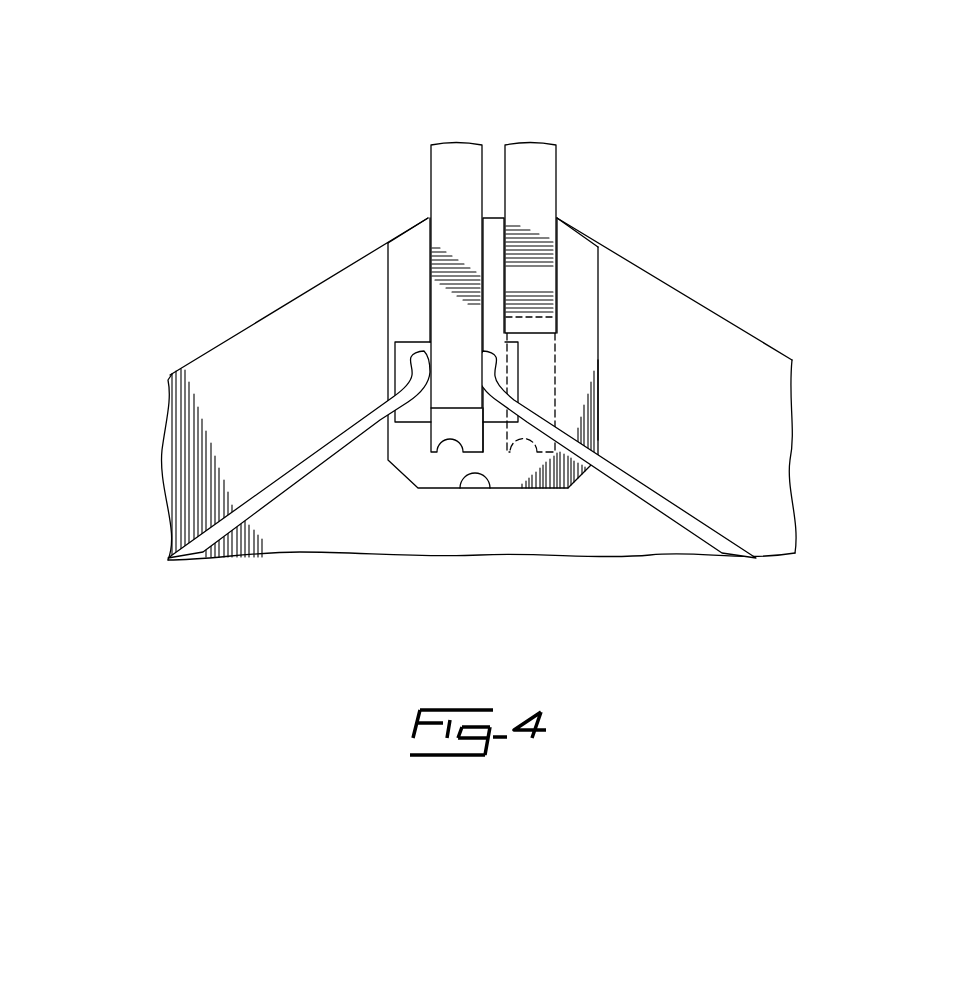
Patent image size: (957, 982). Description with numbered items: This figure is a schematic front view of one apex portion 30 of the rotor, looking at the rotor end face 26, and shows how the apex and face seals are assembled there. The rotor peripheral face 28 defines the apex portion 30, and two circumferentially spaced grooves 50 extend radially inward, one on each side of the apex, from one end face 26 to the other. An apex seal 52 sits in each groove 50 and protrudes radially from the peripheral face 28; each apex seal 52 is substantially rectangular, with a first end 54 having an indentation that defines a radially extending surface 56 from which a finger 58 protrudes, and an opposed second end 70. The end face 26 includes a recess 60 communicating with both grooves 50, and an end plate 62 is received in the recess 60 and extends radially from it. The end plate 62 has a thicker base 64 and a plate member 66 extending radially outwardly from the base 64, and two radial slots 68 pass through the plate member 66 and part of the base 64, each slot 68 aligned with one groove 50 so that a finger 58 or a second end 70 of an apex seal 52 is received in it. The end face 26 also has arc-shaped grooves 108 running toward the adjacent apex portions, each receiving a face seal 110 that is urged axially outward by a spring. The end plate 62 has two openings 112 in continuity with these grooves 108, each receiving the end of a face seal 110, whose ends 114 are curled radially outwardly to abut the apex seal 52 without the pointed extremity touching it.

The end face 26 is at (752, 402).
The peripheral face 28 is at (384, 248).
The apex portion 30 is at (350, 210).
The groove 50 is at (434, 452).
The apex seal 52 is at (458, 157).
The first end 54 is at (533, 198).
The radially extending surface 56 is at (541, 313).
The finger 58 is at (533, 220).
The recess 60 is at (491, 488).
The end plate 62 is at (598, 347).
The base 64 is at (568, 472).
The plate member 66 is at (573, 243).
The radial slot 68 is at (432, 242).
The second end 70 is at (448, 317).
The groove 108 is at (720, 545).
The face seal 110 is at (220, 532).
The opening 112 is at (402, 380).
The end 114 is at (487, 373).